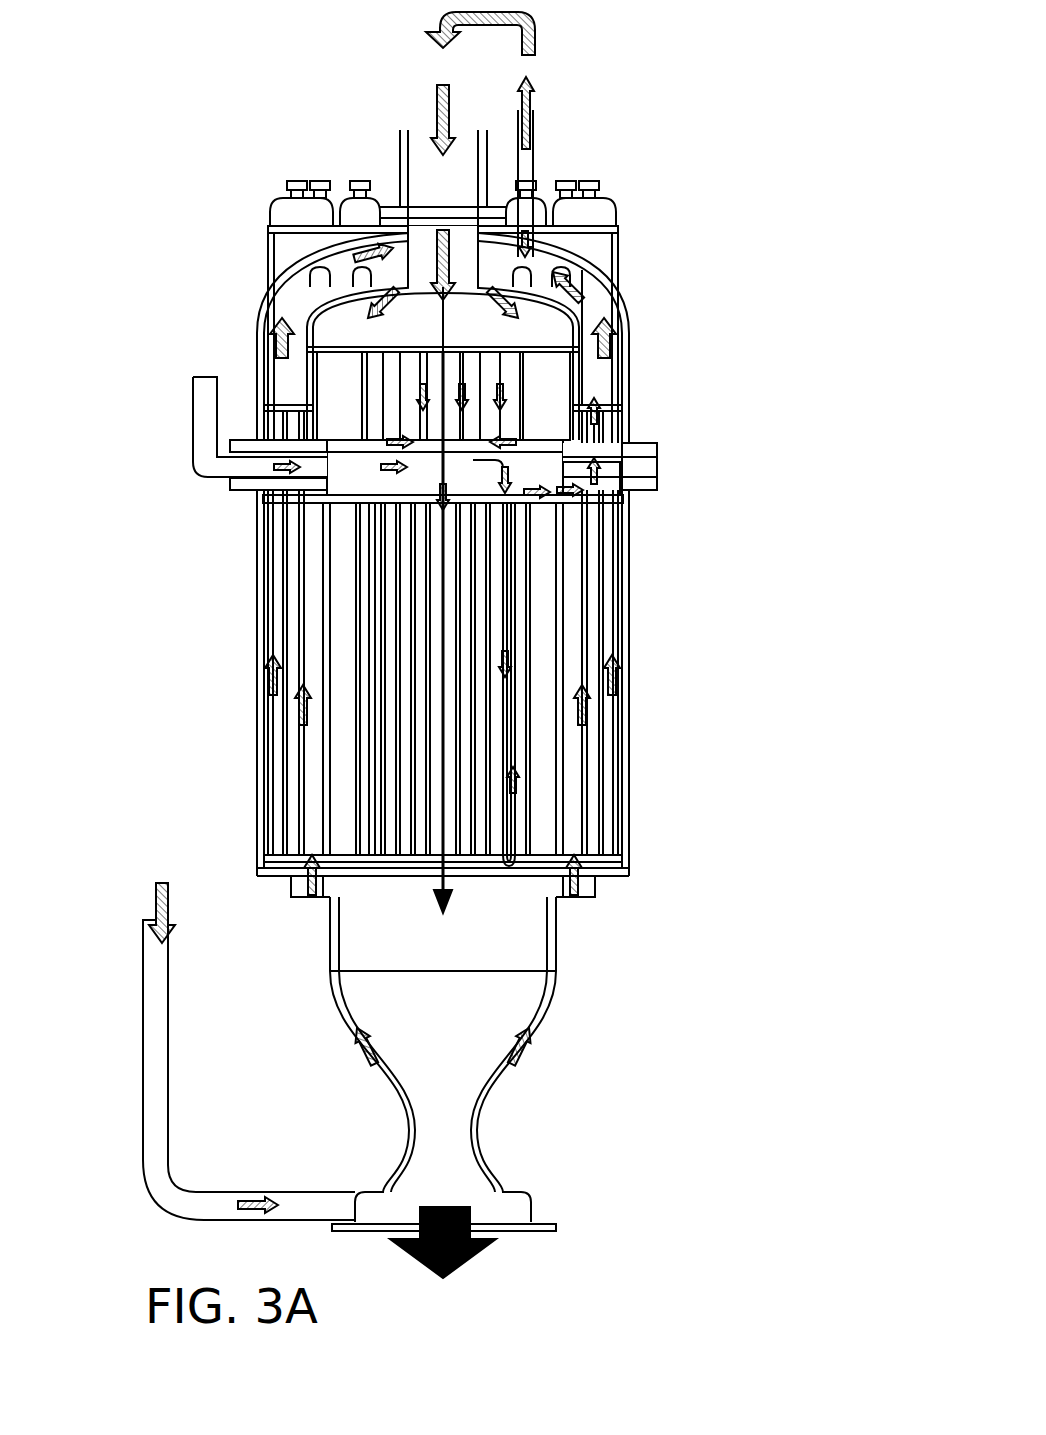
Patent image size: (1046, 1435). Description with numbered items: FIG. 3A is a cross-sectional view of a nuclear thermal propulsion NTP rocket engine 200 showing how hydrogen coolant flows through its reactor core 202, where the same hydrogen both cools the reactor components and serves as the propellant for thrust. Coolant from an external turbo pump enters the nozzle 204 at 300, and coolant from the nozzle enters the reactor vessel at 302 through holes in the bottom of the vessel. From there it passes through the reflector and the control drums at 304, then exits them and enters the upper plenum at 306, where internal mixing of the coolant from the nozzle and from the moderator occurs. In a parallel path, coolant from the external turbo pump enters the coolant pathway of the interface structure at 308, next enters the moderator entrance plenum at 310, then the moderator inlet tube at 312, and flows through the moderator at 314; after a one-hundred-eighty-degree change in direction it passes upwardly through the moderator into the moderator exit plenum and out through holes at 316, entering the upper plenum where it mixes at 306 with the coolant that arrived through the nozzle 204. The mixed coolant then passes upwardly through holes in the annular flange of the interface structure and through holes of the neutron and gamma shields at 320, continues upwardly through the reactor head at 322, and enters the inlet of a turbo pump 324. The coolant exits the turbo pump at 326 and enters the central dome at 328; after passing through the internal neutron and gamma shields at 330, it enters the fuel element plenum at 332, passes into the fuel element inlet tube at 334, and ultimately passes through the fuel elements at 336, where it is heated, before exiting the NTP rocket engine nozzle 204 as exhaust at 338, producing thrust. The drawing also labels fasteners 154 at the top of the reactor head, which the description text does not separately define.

The fasteners 154 is at (603, 212).
The NTP rocket engine 200 is at (699, 260).
The reactor core 202 is at (571, 657).
The nozzle 204 is at (376, 1082).
The nozzle coolant entry 300 is at (163, 880).
The reactor vessel coolant entry 302 is at (586, 873).
The reflector and control drum coolant passage 304 is at (623, 677).
The upper plenum mixing location 306 is at (581, 505).
The interface structure coolant pathway entry 308 is at (234, 468).
The moderator entrance plenum entry 310 is at (355, 470).
The moderator inlet tube entry 312 is at (247, 678).
The moderator flow passage 314 is at (512, 587).
The moderator exit plenum outlet 316 is at (572, 514).
The neutron and gamma shield coolant passage 320 is at (603, 430).
The reactor head coolant passage 322 is at (614, 345).
The turbo pump inlet 324 is at (537, 122).
The turbo pump exit 326 is at (455, 98).
The central dome coolant entry 328 is at (432, 239).
The internal neutron and gamma shield passage 330 is at (459, 342).
The fuel element plenum entry 332 is at (386, 412).
The fuel element inlet tube entry 334 is at (437, 474).
The fuel element flow passage 336 is at (432, 866).
The nozzle exhaust exit 338 is at (483, 1257).